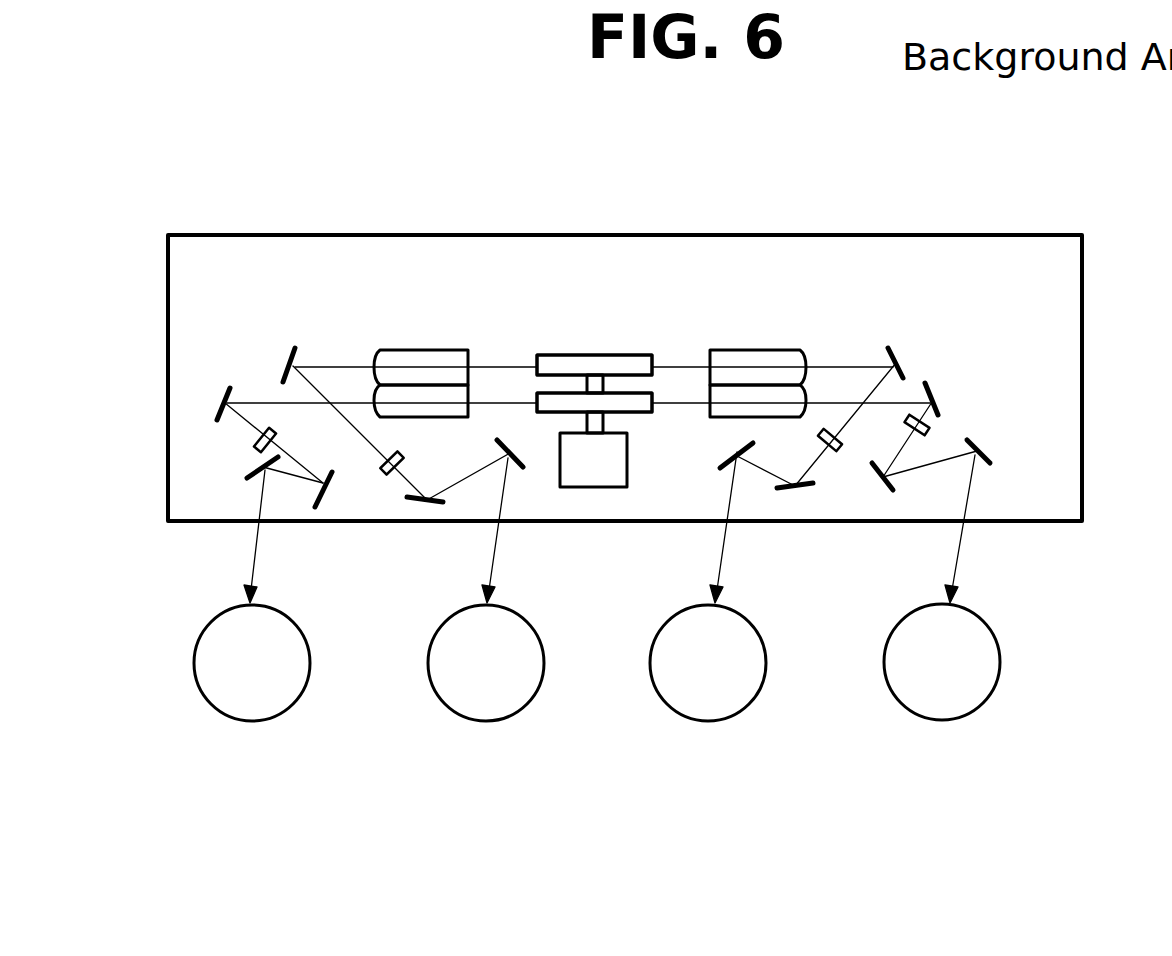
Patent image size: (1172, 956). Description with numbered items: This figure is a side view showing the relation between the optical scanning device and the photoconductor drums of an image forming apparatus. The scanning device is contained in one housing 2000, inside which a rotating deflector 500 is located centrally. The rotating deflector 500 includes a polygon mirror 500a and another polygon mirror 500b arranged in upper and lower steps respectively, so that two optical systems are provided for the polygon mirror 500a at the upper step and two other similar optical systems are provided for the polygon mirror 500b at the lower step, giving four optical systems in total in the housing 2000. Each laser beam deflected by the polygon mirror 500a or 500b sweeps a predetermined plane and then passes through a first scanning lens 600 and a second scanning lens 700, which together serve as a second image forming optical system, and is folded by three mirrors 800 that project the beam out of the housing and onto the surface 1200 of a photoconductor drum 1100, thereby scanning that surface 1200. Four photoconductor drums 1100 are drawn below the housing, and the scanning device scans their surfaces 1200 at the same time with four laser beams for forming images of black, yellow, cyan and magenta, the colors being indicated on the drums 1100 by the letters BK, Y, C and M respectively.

The laser scanning unit housing 2000 is at (733, 235).
The rotating deflector 500 is at (620, 340).
The polygon mirror 500a is at (560, 364).
The polygon mirror 500b is at (637, 413).
The first scanning lens 600 is at (432, 392).
The second scanning lens 700 is at (279, 431).
The mirror 800 is at (290, 350).
The surface 1200 is at (311, 655).
The photoconductor drum 1100 is at (312, 714).